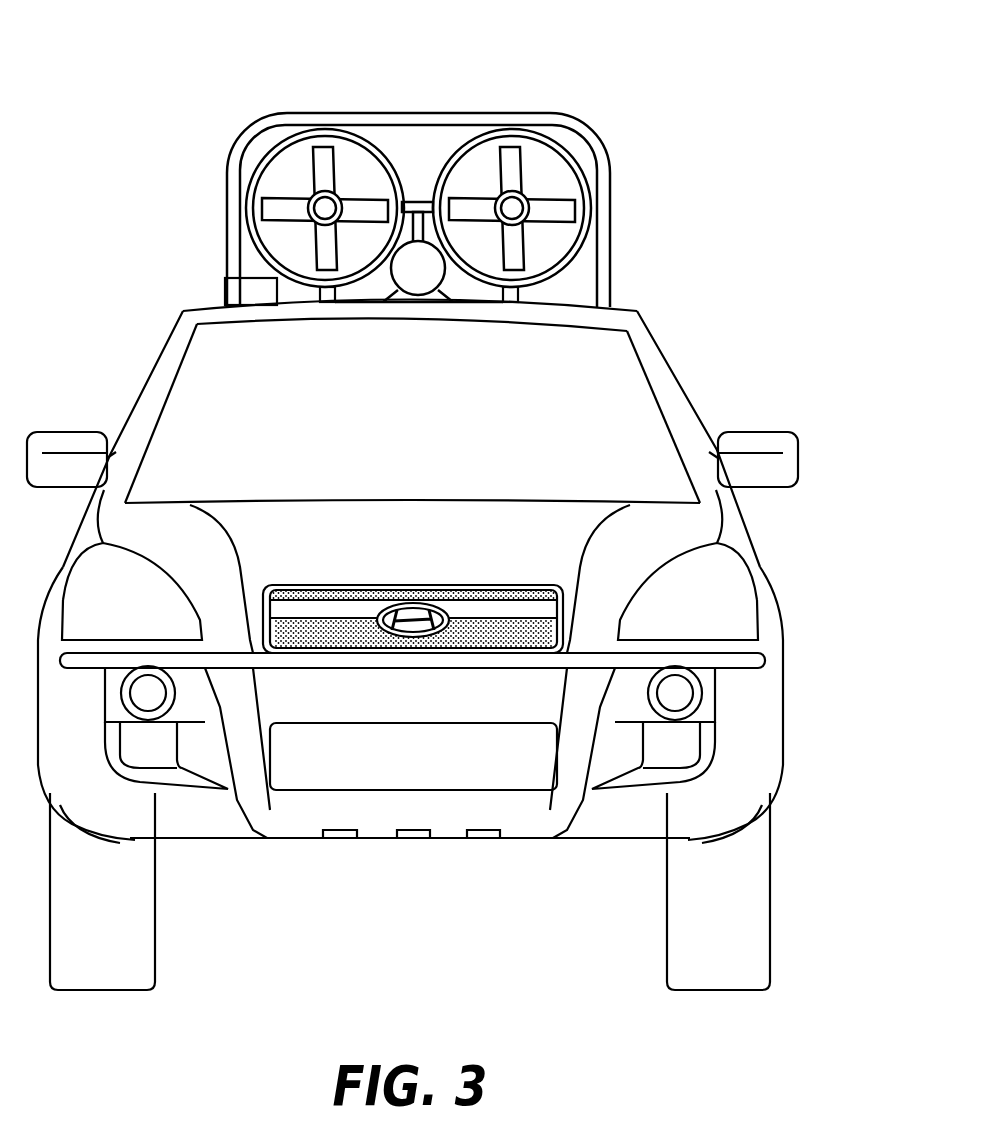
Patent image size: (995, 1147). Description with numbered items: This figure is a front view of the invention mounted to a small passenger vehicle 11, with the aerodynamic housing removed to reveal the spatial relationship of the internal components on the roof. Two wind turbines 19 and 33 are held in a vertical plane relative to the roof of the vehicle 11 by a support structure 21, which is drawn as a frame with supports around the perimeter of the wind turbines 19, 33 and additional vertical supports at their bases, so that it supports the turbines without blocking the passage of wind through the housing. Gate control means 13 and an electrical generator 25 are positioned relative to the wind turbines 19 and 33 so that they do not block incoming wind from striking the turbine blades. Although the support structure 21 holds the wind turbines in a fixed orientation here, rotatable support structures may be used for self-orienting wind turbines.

The small passenger vehicle 11 is at (745, 598).
The gate control means 13 is at (267, 290).
The wind turbine 19 is at (277, 212).
The support structure 21 is at (418, 118).
The electrical generator 25 is at (422, 290).
The wind turbine 33 is at (563, 212).